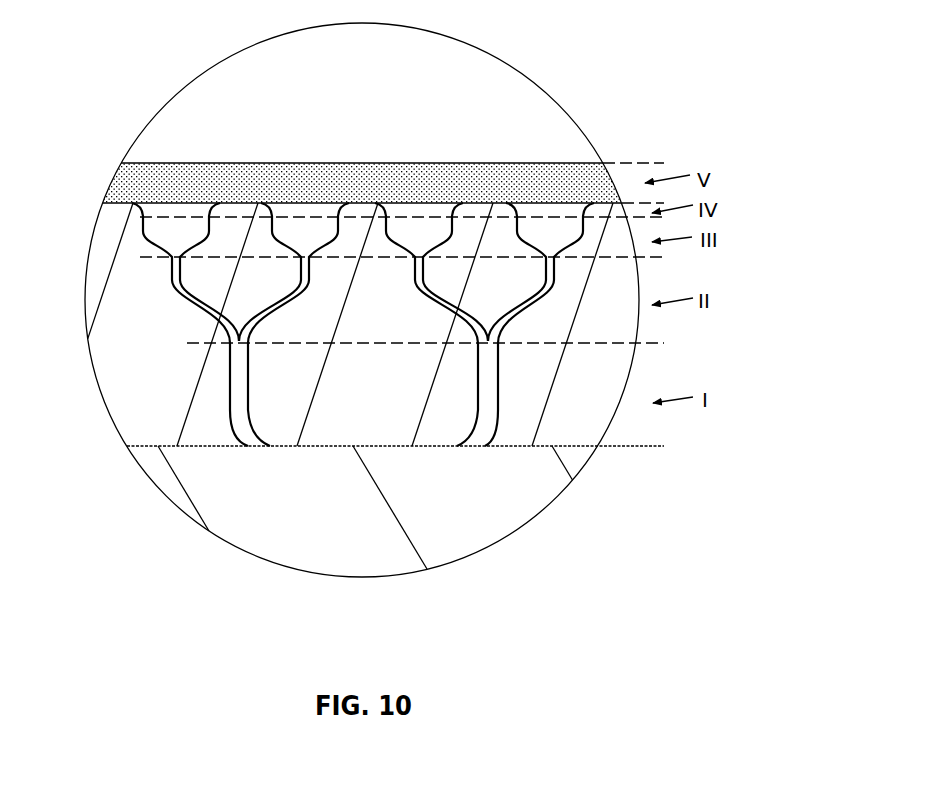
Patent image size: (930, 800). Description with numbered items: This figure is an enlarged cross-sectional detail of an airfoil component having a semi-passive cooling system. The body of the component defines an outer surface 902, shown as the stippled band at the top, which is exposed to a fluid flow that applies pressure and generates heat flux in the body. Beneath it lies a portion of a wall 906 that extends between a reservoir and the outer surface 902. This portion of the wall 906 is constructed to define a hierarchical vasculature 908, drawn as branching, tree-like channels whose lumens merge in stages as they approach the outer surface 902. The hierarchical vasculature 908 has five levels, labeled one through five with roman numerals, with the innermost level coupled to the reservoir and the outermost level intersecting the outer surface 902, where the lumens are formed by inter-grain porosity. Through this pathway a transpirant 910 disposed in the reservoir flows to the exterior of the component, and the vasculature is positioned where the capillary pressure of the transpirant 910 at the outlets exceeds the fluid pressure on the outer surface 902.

The outer surface 902 is at (367, 163).
The wall 906 is at (162, 413).
The hierarchical vasculature 908 is at (183, 311).
The transpirant 910 is at (460, 502).